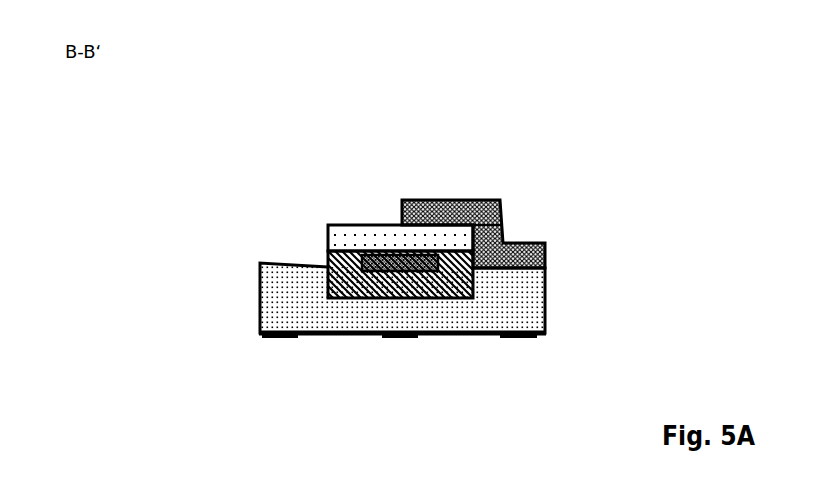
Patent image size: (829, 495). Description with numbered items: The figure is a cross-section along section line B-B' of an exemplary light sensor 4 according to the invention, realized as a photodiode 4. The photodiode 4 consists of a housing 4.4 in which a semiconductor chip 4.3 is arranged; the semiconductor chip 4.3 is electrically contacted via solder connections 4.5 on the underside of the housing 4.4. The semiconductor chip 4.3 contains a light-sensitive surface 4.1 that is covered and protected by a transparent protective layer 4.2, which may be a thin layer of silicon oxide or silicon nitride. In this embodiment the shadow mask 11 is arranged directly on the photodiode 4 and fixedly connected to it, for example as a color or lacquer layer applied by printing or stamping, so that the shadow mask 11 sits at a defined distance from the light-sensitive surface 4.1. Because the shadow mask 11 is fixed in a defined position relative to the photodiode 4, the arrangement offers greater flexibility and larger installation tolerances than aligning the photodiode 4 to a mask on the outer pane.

The light sensor 4 is at (505, 105).
The light-sensitive surface 4.1 is at (330, 248).
The transparent protective layer 4.2 is at (380, 233).
The semiconductor chip 4.3 is at (340, 277).
The housing 4.4 is at (277, 296).
The solder connections 4.5 is at (280, 338).
The shadow mask 11 is at (475, 224).